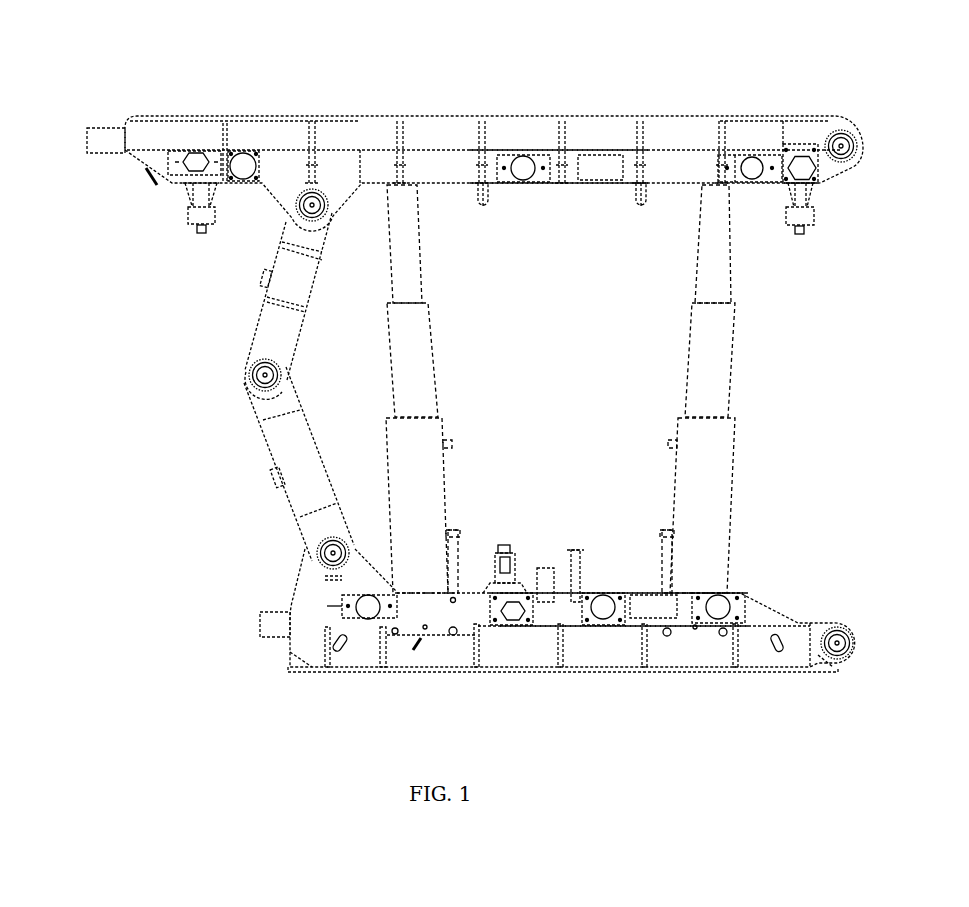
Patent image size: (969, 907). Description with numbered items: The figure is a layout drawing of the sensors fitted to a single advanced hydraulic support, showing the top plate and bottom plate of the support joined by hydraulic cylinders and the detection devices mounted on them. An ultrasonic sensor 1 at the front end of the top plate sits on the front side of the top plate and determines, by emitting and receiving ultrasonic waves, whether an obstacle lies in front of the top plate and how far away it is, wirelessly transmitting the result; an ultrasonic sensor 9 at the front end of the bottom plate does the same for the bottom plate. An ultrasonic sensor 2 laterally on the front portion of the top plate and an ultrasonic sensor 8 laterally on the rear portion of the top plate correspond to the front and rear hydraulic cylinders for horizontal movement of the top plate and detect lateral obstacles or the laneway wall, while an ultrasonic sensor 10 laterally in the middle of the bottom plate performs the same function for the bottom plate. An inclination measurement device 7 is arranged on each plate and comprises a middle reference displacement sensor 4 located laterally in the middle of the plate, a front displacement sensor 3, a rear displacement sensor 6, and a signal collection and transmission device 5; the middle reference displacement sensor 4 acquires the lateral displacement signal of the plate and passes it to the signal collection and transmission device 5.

The ultrasonic sensor at a front end of a top plate 1 is at (97, 133).
The ultrasonic sensor laterally on a front portion of the top plate 2 is at (195, 158).
The front displacement sensor 3 is at (240, 164).
The middle reference displacement sensor 4 is at (512, 165).
The signal collection and transmission device 5 is at (598, 165).
The rear displacement sensor 6 is at (751, 165).
The inclination measurement device 7 is at (635, 49).
The ultrasonic sensor laterally on a rear portion of the top plate 8 is at (802, 163).
The ultrasonic sensor at a front end of a bottom plate 9 is at (260, 620).
The ultrasonic sensor laterally in the middle of the bottom plate 10 is at (513, 583).